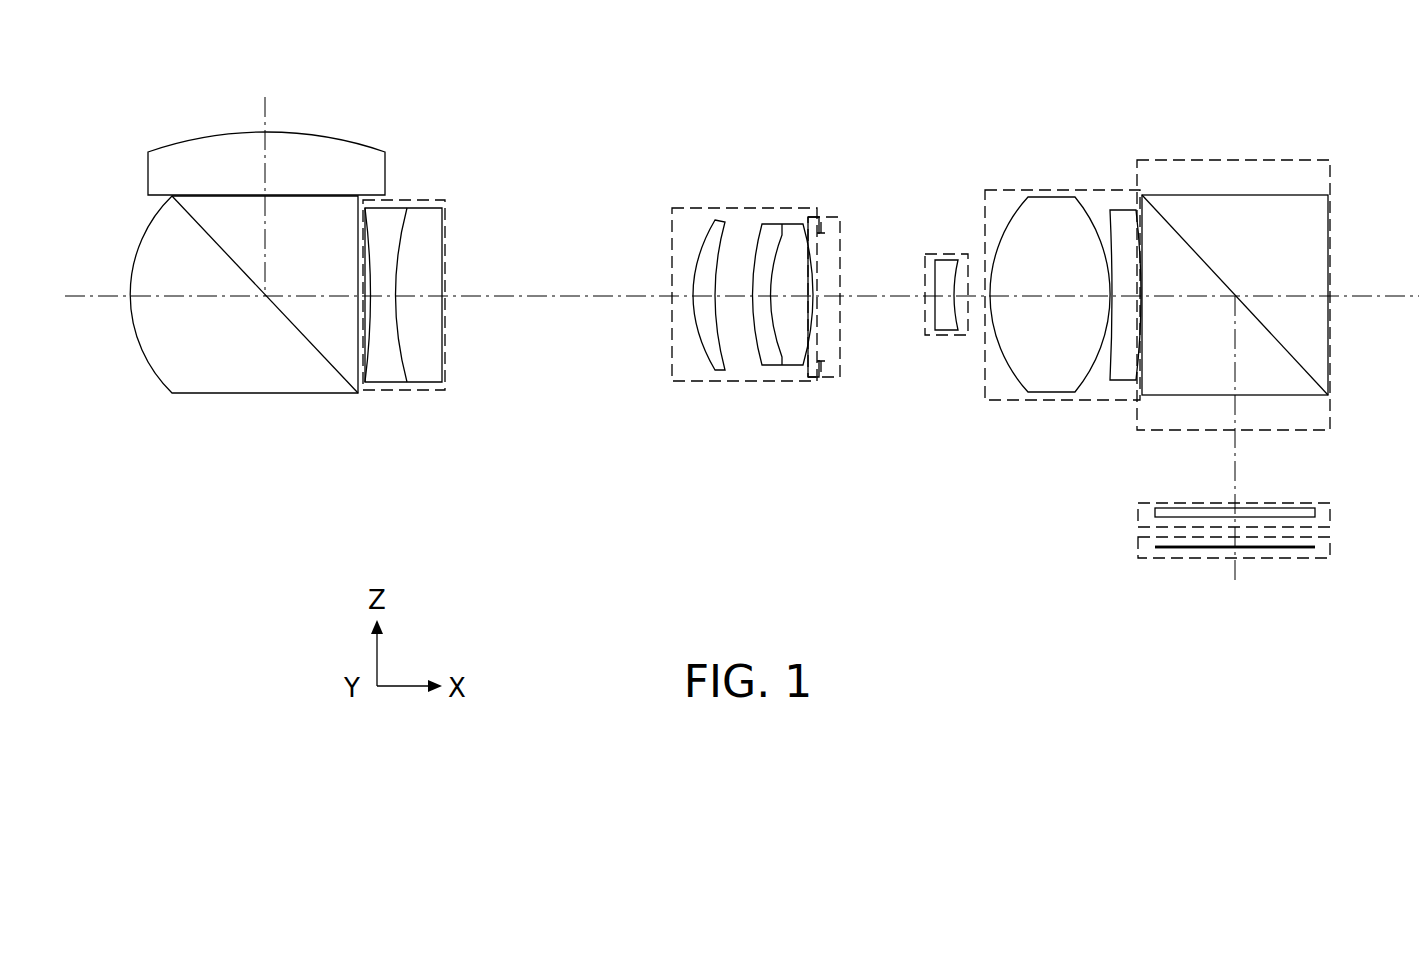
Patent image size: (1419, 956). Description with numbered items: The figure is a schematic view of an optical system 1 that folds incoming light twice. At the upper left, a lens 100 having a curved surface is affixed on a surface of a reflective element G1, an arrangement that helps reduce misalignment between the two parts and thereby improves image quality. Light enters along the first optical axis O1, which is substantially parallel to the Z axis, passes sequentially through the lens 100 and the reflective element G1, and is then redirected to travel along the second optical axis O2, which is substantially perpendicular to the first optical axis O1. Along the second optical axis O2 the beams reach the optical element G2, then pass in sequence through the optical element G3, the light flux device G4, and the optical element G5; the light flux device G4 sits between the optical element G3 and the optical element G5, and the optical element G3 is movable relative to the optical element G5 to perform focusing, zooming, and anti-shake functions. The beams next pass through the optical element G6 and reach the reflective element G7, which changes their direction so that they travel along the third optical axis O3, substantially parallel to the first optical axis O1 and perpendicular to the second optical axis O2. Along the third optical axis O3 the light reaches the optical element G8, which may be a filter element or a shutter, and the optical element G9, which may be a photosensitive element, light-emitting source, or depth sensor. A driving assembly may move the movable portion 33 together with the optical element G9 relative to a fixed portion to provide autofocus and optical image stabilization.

The optical system 1 is at (171, 81).
The lens 100 is at (353, 171).
The reflective element G1 is at (244, 314).
The optical element G2 is at (404, 316).
The optical element G3 is at (744, 316).
The light flux device G4 is at (825, 320).
The optical element G5 is at (946, 315).
The optical element G6 is at (1063, 317).
The reflective element G7 is at (1233, 295).
The optical element G8 is at (1256, 515).
The optical element G9 is at (1256, 549).
The movable portion 33 is at (1330, 558).
The first optical axis O1 is at (262, 177).
The second optical axis O2 is at (742, 276).
The third optical axis O3 is at (1237, 458).